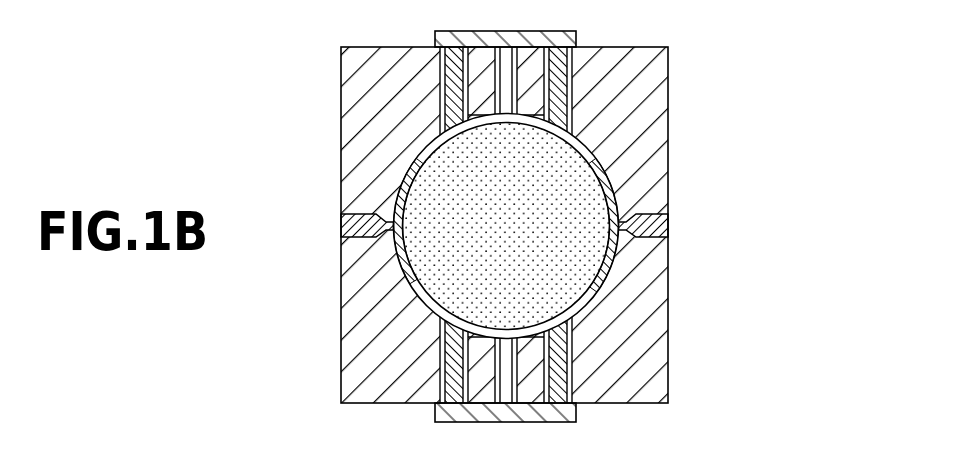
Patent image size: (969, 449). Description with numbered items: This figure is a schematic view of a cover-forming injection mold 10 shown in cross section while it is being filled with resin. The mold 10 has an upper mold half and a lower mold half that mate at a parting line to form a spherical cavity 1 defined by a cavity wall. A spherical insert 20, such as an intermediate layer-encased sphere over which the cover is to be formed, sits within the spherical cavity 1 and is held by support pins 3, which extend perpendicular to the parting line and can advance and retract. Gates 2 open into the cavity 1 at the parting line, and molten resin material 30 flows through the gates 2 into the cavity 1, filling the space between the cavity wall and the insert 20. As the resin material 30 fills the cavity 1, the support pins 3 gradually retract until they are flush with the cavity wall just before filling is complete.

The injection mold 10 is at (564, 226).
The spherical cavity 1 is at (438, 133).
The gates 2 is at (668, 223).
The support pins 3 is at (552, 76).
The spherical insert 20 is at (457, 213).
The molten resin material 30 is at (612, 176).